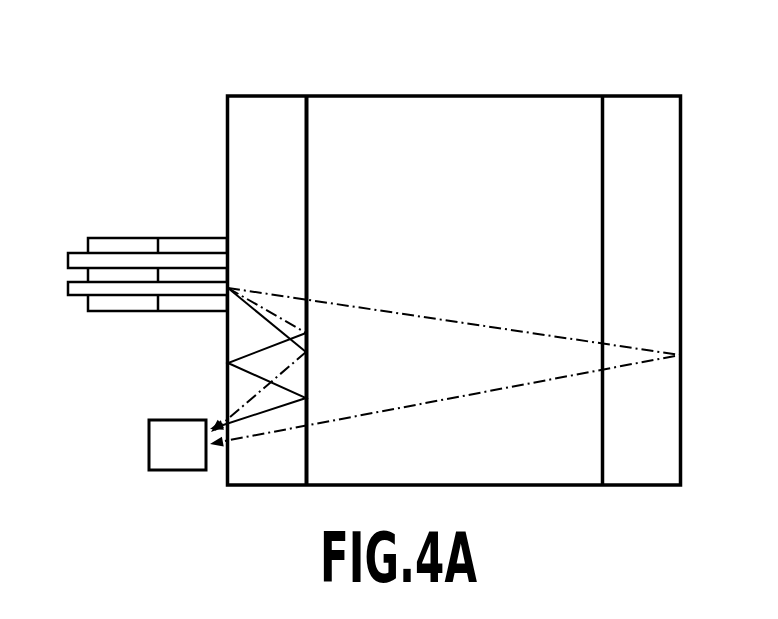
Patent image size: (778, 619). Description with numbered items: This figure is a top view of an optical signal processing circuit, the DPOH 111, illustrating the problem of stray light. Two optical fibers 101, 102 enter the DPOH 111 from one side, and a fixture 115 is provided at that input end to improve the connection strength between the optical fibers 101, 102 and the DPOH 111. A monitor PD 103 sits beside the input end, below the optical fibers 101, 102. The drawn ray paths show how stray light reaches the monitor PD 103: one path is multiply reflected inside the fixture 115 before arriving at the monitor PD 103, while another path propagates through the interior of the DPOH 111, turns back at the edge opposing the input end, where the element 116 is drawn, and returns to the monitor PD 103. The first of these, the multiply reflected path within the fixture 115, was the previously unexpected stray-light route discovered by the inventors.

The optical fiber 101 is at (80, 252).
The optical fiber 102 is at (80, 297).
The monitor PD 103 is at (178, 418).
The DPOH 111 is at (455, 94).
The fixture 115 is at (268, 94).
The reflecting surface 116 is at (643, 94).